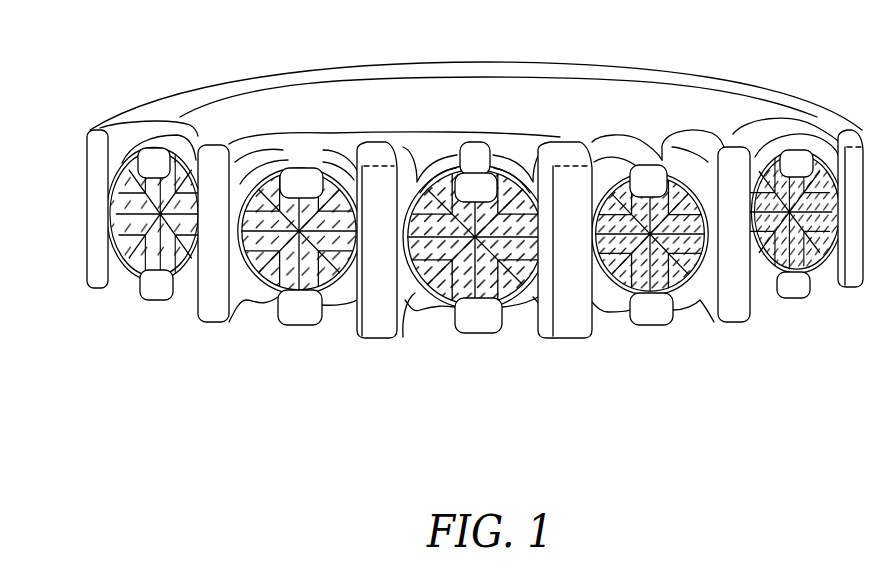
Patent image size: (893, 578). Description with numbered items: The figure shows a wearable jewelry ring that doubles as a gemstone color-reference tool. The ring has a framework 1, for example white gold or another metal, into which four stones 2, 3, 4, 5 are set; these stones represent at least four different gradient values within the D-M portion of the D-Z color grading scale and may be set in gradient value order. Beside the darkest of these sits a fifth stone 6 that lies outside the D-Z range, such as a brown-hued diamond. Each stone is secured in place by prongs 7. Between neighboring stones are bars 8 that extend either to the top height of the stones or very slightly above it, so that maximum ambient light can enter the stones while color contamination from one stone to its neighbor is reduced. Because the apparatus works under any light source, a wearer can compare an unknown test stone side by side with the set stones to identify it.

The framework 1 is at (753, 100).
The stone 2 is at (133, 282).
The stone 3 is at (265, 310).
The stone 4 is at (512, 303).
The stone 5 is at (685, 287).
The fifth stone 6 is at (820, 268).
The prong 7 is at (158, 300).
The bar 8 is at (98, 260).